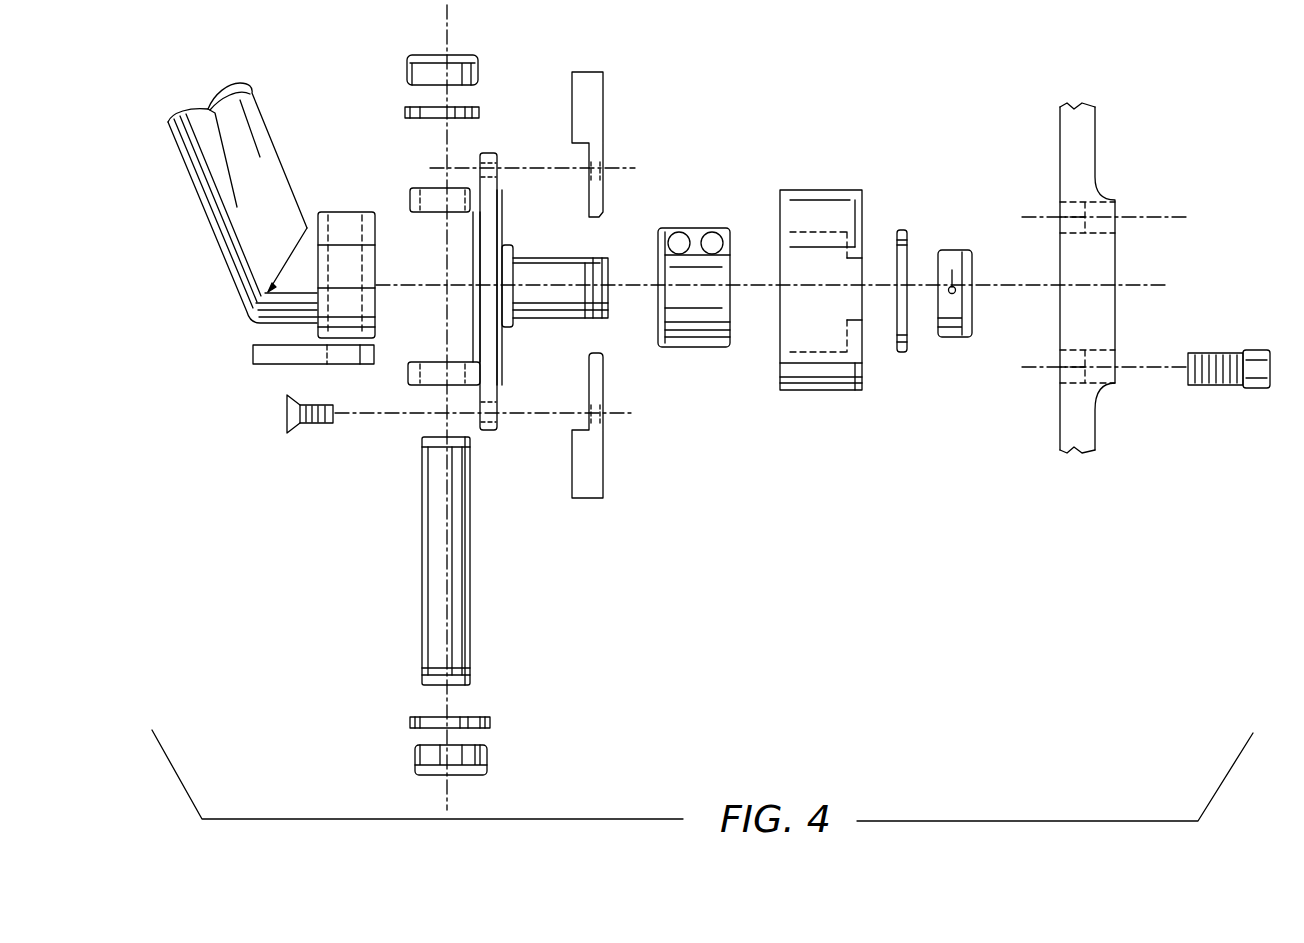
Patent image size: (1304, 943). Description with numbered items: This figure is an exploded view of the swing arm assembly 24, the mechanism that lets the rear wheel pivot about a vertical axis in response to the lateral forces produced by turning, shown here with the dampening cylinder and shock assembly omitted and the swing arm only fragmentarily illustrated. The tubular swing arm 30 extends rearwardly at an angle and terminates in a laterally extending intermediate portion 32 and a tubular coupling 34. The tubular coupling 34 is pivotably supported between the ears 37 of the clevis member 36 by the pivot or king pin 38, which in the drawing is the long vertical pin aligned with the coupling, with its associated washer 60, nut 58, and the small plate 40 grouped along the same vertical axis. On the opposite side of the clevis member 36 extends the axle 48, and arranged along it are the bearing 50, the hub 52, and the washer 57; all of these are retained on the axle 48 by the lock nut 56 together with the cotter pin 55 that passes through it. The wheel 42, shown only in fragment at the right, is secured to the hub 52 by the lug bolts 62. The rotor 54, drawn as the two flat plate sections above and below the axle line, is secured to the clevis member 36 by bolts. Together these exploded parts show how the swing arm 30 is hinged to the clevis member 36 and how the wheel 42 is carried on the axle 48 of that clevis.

The swing arm assembly 24 is at (262, 102).
The tubular swing arm 30 is at (217, 240).
The intermediate portion 32 is at (287, 300).
The tubular coupling 34 is at (340, 212).
The clevis member 36 is at (490, 153).
The ears 37 is at (418, 190).
The pivot or king pin 38 is at (473, 536).
The bar 40 is at (277, 354).
The wheel 42 is at (1117, 270).
The axle 48 is at (542, 265).
The bearing 50 is at (728, 228).
The hub 52 is at (812, 190).
The rotor 54 is at (597, 113).
The cotter pin 55 is at (952, 286).
The lock nut 56 is at (965, 255).
The washer 57 is at (900, 340).
The nut 58 is at (488, 757).
The washer 60 is at (490, 722).
The lug bolts 62 is at (1236, 326).